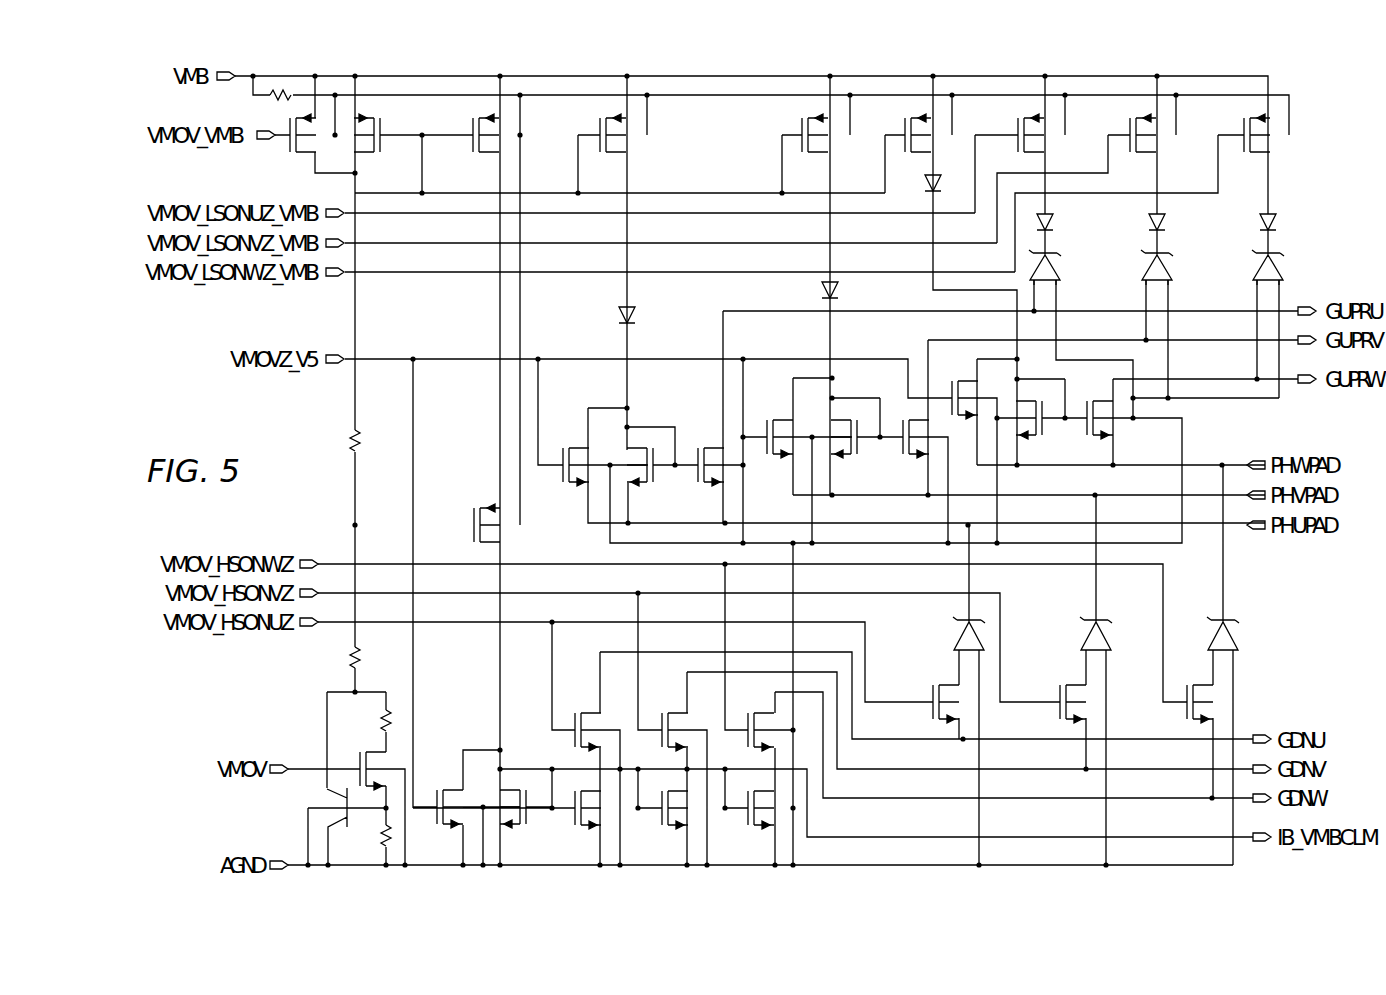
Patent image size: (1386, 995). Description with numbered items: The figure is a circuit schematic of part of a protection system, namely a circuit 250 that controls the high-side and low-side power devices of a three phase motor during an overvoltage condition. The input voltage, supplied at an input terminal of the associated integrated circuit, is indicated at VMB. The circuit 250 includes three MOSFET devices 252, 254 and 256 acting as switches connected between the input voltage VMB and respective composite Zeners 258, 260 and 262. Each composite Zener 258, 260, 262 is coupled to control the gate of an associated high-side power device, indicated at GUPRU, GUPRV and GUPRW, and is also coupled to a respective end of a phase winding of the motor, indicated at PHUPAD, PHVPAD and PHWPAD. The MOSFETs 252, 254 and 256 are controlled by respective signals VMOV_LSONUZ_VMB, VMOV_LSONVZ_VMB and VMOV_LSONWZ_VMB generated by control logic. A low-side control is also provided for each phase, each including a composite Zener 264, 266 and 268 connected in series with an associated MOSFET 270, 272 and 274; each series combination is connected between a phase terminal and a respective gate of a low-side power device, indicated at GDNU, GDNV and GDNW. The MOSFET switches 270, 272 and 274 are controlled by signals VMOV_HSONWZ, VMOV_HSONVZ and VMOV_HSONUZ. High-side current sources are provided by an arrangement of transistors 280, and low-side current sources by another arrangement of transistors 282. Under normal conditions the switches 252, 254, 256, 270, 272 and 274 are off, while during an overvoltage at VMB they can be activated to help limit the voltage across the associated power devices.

The circuit 250 is at (1302, 109).
The MOSFET device 252 is at (1013, 124).
The MOSFET device 254 is at (1124, 124).
The MOSFET device 256 is at (1238, 124).
The composite Zener 258 is at (1063, 265).
The composite Zener 260 is at (1175, 265).
The composite Zener 262 is at (1286, 265).
The composite Zener 264 is at (955, 630).
The composite Zener 266 is at (1082, 630).
The composite Zener 268 is at (1238, 630).
The MOSFET 270 is at (930, 711).
The MOSFET 272 is at (1056, 711).
The MOSFET 274 is at (1183, 711).
The arrangement of transistors 280 is at (700, 342).
The arrangement of transistors 282 is at (489, 684).